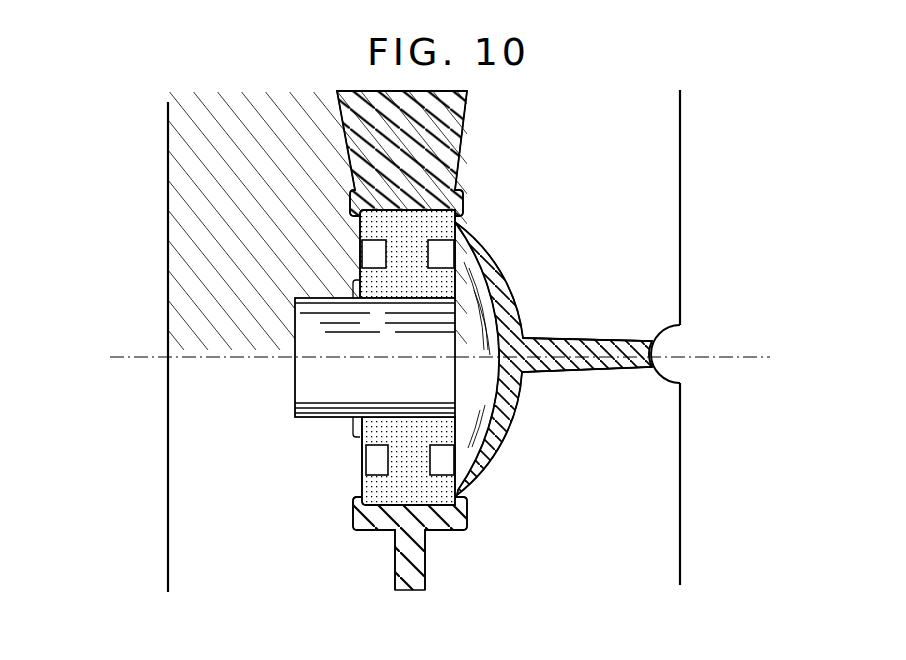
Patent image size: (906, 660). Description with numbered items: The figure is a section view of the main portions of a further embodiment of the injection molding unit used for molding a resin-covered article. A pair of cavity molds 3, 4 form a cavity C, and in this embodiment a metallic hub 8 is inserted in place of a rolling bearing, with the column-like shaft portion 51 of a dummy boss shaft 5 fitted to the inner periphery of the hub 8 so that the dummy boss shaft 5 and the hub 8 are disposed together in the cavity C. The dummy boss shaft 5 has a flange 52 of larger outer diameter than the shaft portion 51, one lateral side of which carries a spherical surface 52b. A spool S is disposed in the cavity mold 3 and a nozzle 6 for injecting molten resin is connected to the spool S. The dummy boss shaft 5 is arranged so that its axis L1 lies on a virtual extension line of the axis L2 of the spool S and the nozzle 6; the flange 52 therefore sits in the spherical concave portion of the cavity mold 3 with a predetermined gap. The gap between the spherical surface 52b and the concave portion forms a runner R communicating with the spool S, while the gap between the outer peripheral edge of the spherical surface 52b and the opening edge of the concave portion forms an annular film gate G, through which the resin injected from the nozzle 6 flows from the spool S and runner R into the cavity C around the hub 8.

The cavity mold 3 is at (682, 528).
The cavity mold 4 is at (168, 553).
The dummy boss shaft 5 is at (318, 337).
The nozzle 6 is at (766, 380).
The metallic hub 8 is at (363, 263).
The shaft portion 51 is at (325, 398).
The flange 52 is at (473, 407).
The spherical surface 52b is at (500, 317).
The cavity C is at (452, 520).
The film gate G is at (462, 221).
The runner R is at (490, 262).
The spool S is at (590, 337).
The axis of the dummy boss shaft L1 is at (110, 363).
The axis of the spool and the nozzle L2 is at (808, 352).